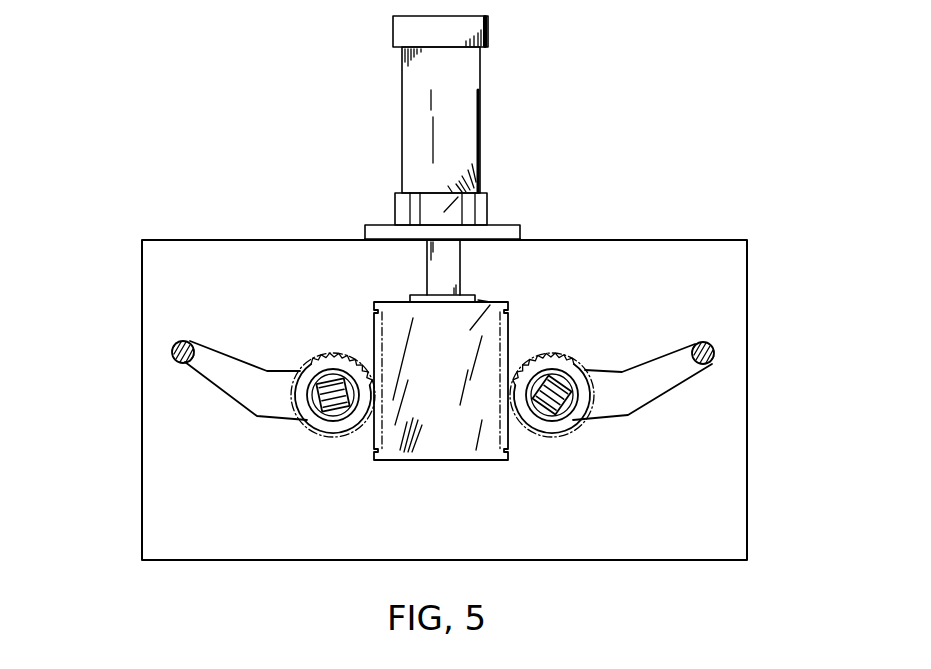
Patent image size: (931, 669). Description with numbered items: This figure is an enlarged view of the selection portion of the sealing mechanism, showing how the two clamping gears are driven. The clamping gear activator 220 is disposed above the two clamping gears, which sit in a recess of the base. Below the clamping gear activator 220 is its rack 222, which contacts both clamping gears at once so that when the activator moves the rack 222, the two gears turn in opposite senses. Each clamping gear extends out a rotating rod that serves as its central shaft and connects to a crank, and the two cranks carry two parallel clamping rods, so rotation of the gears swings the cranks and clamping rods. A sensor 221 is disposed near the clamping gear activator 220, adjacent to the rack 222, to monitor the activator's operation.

The clamping gear activator 220 is at (464, 126).
The sensor 221 is at (479, 178).
The rack 222 is at (450, 452).